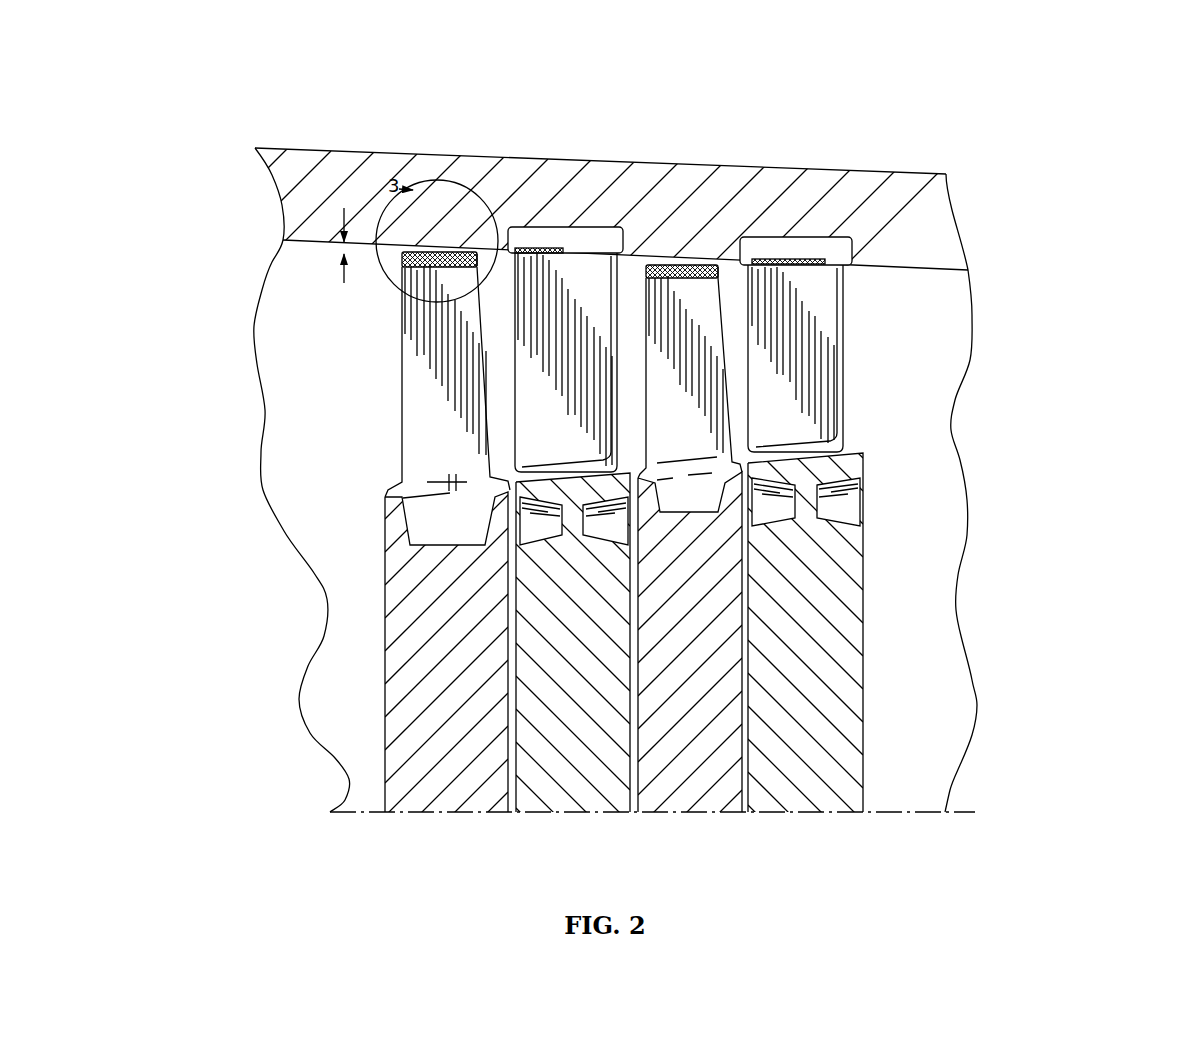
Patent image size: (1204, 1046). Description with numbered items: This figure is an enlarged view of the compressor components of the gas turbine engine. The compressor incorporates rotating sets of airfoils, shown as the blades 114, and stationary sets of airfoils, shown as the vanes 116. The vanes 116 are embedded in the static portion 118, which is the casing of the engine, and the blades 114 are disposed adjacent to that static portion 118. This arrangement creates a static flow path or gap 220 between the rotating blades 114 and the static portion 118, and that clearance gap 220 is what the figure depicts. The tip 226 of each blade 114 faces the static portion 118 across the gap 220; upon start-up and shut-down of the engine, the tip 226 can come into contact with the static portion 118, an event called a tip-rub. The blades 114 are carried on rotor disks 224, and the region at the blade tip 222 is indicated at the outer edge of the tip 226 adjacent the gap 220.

The blade 114 is at (422, 433).
The vane 116 is at (827, 322).
The static portion 118 is at (943, 233).
The gap 220 is at (344, 276).
The blade tip 222 is at (483, 258).
The rotor disk 224 is at (445, 793).
The tip 226 is at (447, 252).